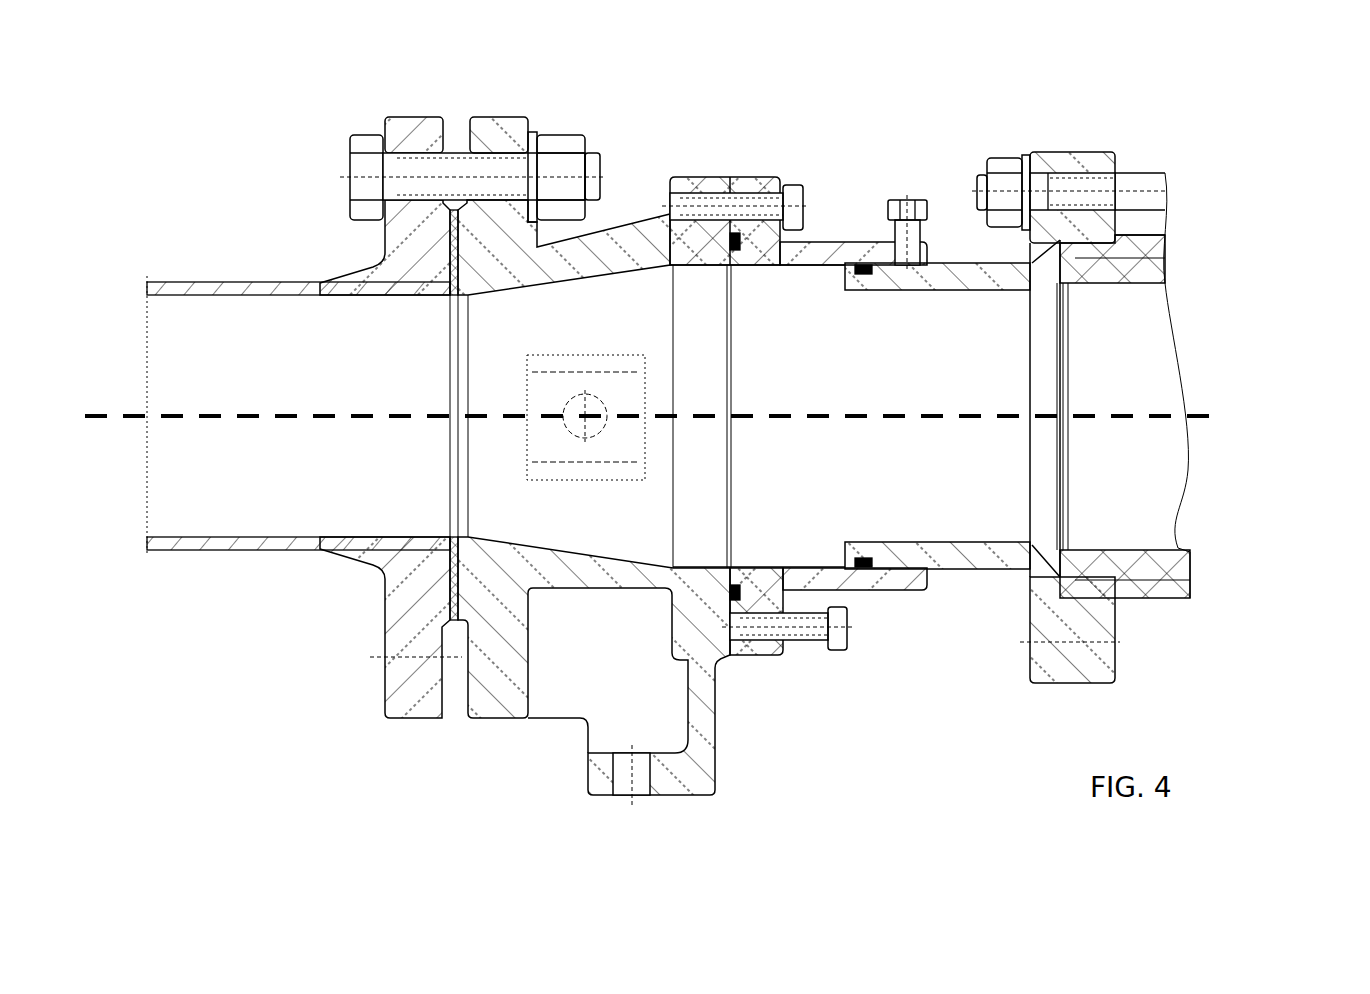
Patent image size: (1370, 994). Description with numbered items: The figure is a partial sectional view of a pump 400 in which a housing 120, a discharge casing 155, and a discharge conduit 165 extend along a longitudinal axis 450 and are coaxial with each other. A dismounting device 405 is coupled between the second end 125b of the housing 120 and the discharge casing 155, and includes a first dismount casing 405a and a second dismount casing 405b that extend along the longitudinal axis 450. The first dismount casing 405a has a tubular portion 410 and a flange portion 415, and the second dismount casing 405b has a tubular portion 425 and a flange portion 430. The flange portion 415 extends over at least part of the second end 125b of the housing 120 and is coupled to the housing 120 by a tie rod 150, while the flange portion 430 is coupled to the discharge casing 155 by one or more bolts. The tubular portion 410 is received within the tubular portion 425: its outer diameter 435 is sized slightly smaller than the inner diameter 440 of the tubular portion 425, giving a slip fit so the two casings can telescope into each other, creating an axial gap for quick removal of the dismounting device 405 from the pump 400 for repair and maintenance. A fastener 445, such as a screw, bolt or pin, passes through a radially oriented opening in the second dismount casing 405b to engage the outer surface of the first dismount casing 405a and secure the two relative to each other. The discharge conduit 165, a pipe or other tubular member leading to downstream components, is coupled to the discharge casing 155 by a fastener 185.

The pump 400 is at (1267, 116).
The housing 120 is at (1195, 225).
The second end of the housing 125b is at (1149, 146).
The tie rod 150 is at (1133, 173).
The discharge casing 155 is at (522, 87).
The discharge conduit 165 is at (183, 250).
The fastener 185 is at (460, 150).
The dismounting device 405 is at (846, 427).
The first dismount casing 405a is at (937, 431).
The second dismount casing 405b is at (798, 399).
The tubular portion of the first dismount casing 410 is at (962, 262).
The flange portion of the first dismount casing 415 is at (1080, 150).
The tubular portion of the second dismount casing 425 is at (832, 242).
The flange portion of the second dismount casing 430 is at (775, 177).
The outer diameter 435 is at (983, 570).
The inner diameter 440 is at (812, 262).
The fastener 445 is at (790, 183).
The longitudinal axis 450 is at (1200, 415).